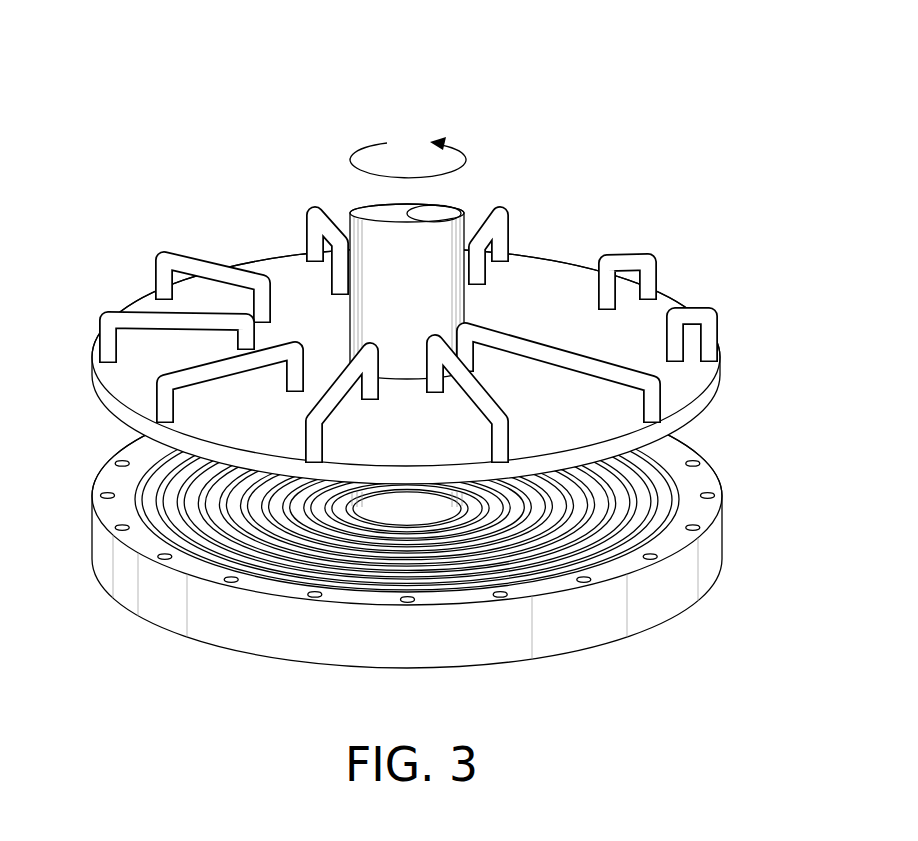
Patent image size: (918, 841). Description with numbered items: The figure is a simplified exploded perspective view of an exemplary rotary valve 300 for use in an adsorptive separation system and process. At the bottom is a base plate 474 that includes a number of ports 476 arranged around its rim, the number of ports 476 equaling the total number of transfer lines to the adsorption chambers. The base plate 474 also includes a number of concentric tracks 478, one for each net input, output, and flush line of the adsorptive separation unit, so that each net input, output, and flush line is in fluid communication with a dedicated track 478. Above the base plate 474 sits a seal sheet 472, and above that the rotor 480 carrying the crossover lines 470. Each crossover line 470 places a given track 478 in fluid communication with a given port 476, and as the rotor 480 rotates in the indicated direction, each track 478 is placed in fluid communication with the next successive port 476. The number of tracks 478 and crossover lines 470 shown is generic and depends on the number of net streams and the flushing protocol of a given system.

The rotary valve 300 is at (412, 357).
The crossover lines 470 is at (99, 337).
The seal sheet 472 is at (118, 385).
The base plate 474 is at (258, 637).
The ports 476 is at (710, 496).
The tracks 478 is at (663, 462).
The rotor 480 is at (433, 247).